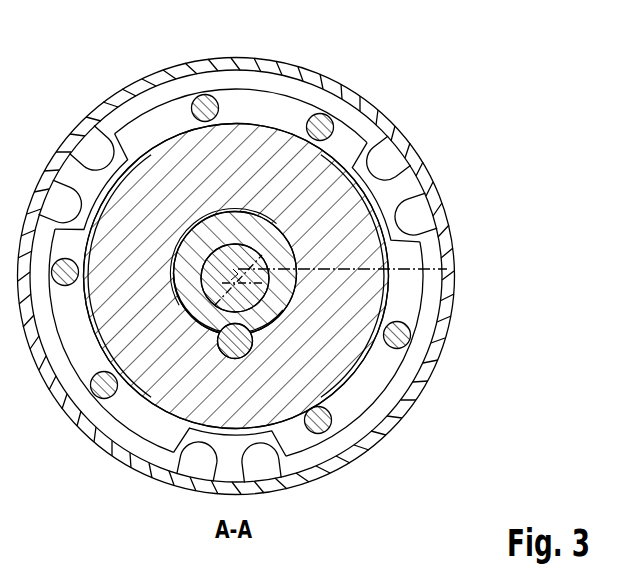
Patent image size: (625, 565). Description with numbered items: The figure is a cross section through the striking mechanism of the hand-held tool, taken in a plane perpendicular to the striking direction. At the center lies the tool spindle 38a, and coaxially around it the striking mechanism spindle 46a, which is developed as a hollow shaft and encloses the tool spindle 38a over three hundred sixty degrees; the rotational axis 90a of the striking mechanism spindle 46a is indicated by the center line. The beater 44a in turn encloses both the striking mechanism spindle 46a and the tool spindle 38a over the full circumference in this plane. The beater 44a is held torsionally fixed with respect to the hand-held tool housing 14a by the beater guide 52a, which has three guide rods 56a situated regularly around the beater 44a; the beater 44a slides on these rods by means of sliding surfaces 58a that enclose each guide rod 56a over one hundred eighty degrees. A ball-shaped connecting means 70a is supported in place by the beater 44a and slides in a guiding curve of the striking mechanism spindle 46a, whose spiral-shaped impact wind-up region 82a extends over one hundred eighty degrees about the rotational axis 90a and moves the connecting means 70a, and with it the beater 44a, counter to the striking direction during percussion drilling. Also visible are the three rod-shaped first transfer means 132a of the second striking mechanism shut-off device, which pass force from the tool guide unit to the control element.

The beater guide 52a is at (355, 488).
The hand-held tool housing 14a is at (430, 207).
The beater 44a is at (377, 290).
The guide rods 56a is at (317, 140).
The sliding surfaces 58a is at (318, 133).
The tool spindle 38a is at (272, 302).
The striking mechanism spindle 46a is at (273, 237).
The impact wind-up region 82a is at (280, 313).
The first transfer means 132a is at (283, 279).
The rotational axis 90a is at (447, 268).
The connecting means 70a is at (250, 340).